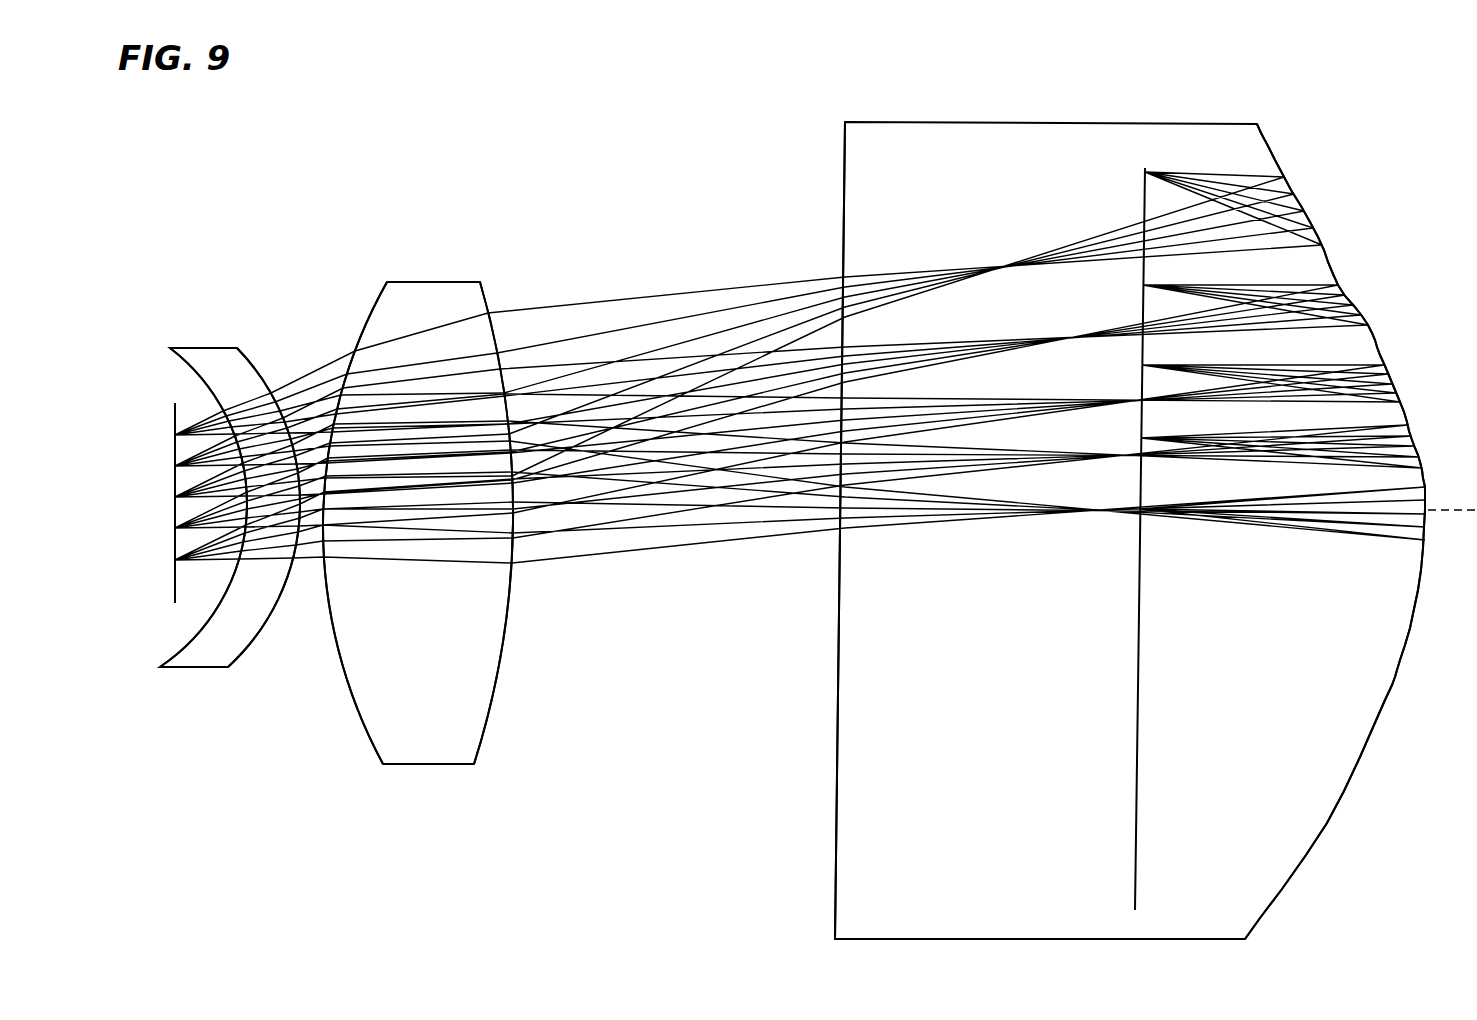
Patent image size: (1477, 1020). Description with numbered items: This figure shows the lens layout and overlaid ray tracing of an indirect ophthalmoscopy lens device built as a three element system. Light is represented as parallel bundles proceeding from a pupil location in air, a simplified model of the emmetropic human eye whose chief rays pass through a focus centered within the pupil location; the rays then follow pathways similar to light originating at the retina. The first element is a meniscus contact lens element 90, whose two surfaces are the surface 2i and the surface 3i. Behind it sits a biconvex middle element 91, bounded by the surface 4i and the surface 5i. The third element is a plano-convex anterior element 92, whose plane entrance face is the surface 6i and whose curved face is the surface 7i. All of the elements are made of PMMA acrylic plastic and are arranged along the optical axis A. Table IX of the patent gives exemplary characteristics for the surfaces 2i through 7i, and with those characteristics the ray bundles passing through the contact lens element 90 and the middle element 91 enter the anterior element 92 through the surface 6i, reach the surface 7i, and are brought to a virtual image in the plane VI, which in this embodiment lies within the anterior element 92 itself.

The meniscus contact lens element 90 is at (208, 360).
The biconvex middle element 91 is at (430, 282).
The plano-convex anterior element 92 is at (1083, 143).
The surface 2i is at (192, 640).
The surface 3i is at (230, 667).
The surface 4i is at (369, 723).
The surface 5i is at (487, 720).
The surface 6i is at (838, 806).
The surface 7i is at (1318, 838).
The virtual image plane VI is at (1139, 607).
The optical axis A is at (1440, 512).